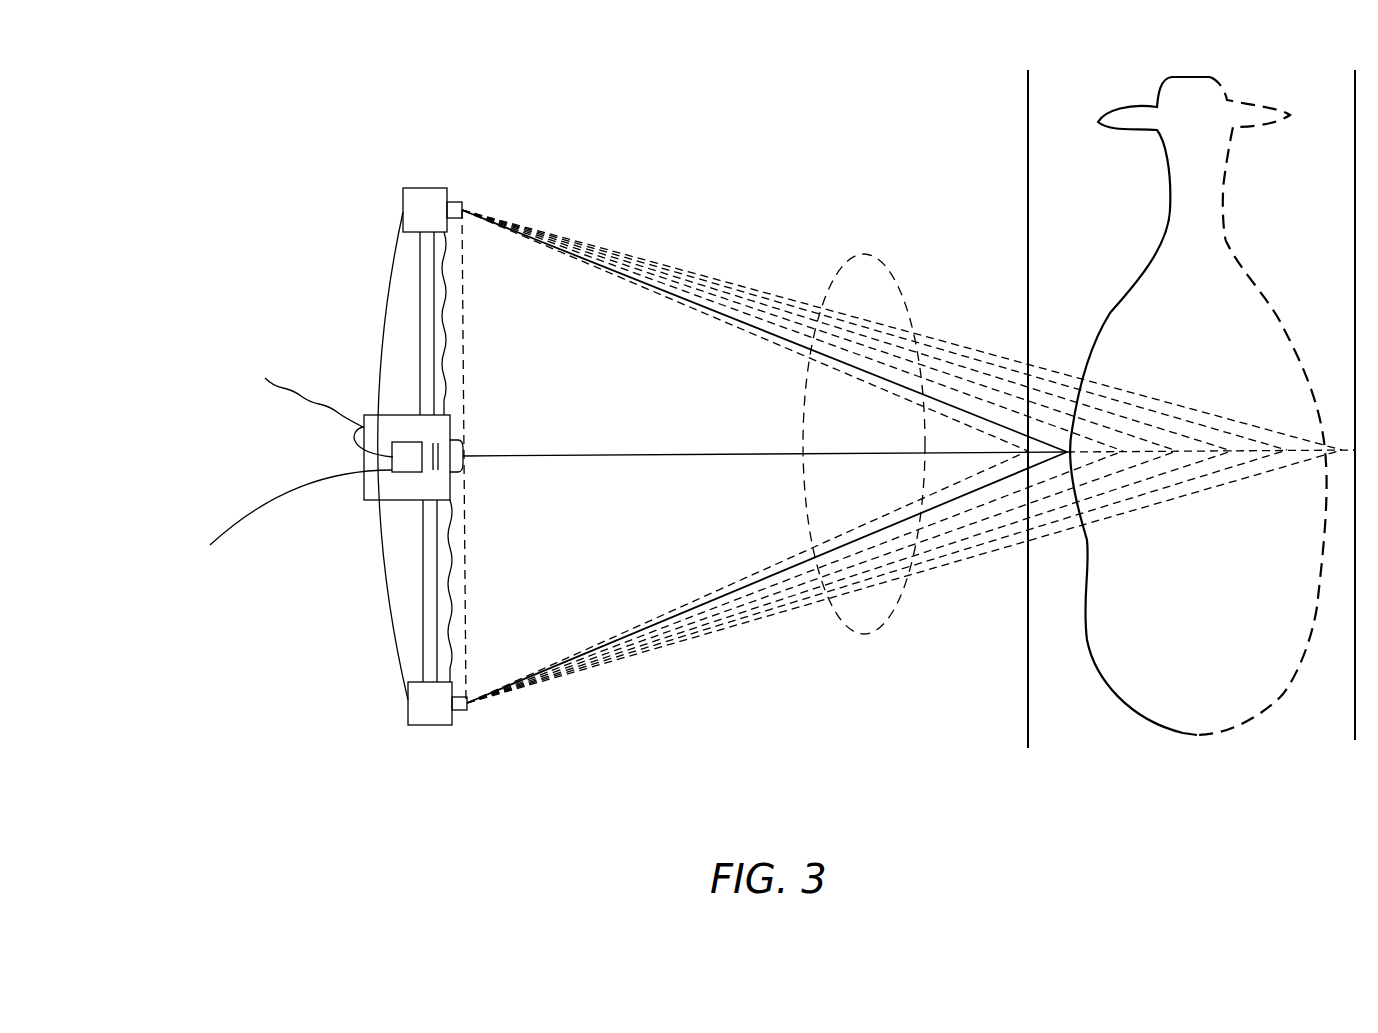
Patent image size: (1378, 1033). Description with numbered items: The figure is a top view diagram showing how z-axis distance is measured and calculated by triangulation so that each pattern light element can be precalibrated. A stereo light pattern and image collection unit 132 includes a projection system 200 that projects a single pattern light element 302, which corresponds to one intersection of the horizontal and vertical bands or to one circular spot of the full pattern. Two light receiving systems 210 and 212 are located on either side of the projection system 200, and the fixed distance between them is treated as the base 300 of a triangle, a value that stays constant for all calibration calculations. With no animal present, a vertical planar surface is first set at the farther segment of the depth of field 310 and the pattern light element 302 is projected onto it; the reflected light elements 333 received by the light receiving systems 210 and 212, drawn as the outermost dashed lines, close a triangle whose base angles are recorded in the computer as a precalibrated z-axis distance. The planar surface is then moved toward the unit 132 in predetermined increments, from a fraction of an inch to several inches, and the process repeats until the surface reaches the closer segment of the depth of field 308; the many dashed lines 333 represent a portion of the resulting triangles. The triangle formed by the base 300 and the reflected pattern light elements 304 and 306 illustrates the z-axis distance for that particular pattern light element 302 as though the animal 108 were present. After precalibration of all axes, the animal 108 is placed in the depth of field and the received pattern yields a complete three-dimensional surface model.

The animal 108 is at (1218, 293).
The stereo light pattern and image collection unit 132 is at (345, 349).
The projection system 200 is at (375, 500).
The light receiving system 210 is at (437, 727).
The light receiving system 212 is at (437, 185).
The base 300 is at (467, 522).
The pattern light element 302 is at (523, 457).
The reflected pattern light element 304 is at (697, 302).
The reflected pattern light element 306 is at (708, 600).
The closer segment of the depth of field 308 is at (1028, 715).
The farther segment of the depth of field 310 is at (1355, 707).
The reflected light elements (dashed lines) 333 is at (869, 256).